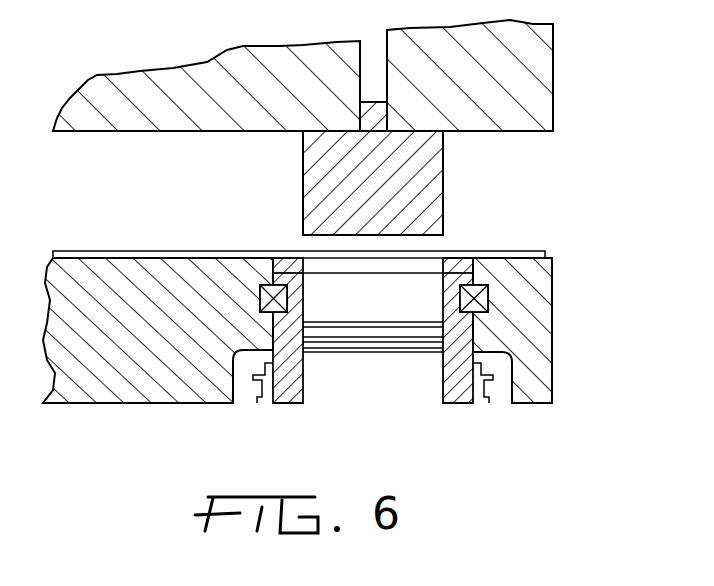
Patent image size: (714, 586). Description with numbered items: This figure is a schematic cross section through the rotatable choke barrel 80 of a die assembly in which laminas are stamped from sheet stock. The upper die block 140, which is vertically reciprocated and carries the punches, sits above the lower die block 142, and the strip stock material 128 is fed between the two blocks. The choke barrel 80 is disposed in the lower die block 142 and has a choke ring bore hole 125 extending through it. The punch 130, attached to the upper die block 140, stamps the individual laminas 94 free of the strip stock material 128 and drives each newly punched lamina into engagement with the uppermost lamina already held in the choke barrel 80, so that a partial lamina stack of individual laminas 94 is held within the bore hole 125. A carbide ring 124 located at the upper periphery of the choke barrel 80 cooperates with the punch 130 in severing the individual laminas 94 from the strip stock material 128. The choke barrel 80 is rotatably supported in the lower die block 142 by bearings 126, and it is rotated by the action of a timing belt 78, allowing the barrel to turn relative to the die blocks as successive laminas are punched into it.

The upper die block 140 is at (547, 75).
The punch 130 is at (440, 160).
The lower die block 142 is at (543, 313).
The strip stock material 128 is at (537, 253).
The choke ring bore hole 125 is at (330, 388).
The carbide ring 124 is at (320, 263).
The bearings 126 is at (259, 297).
The laminas 94 is at (387, 337).
The timing belt 78 is at (257, 393).
The choke barrel 80 is at (433, 406).